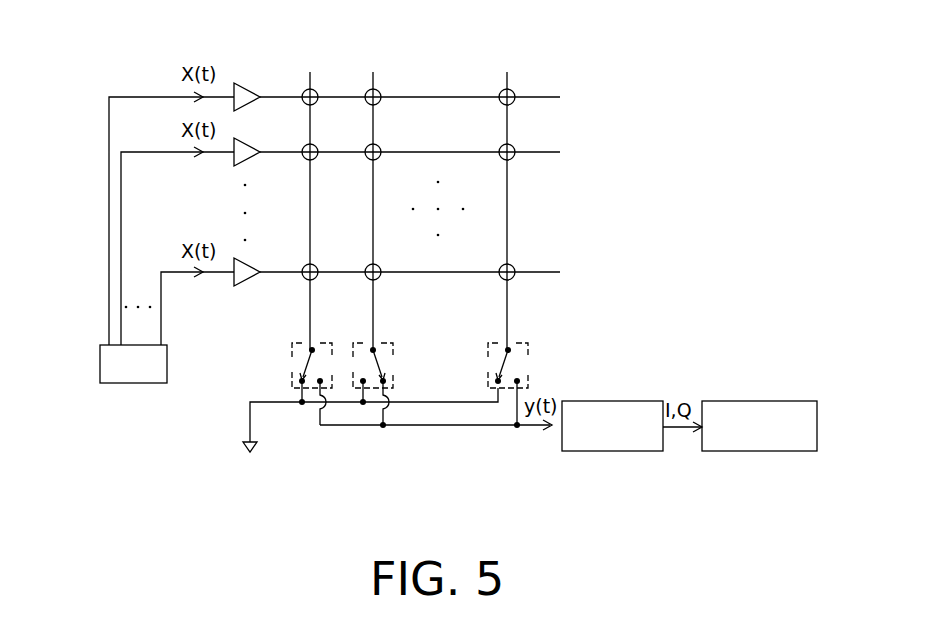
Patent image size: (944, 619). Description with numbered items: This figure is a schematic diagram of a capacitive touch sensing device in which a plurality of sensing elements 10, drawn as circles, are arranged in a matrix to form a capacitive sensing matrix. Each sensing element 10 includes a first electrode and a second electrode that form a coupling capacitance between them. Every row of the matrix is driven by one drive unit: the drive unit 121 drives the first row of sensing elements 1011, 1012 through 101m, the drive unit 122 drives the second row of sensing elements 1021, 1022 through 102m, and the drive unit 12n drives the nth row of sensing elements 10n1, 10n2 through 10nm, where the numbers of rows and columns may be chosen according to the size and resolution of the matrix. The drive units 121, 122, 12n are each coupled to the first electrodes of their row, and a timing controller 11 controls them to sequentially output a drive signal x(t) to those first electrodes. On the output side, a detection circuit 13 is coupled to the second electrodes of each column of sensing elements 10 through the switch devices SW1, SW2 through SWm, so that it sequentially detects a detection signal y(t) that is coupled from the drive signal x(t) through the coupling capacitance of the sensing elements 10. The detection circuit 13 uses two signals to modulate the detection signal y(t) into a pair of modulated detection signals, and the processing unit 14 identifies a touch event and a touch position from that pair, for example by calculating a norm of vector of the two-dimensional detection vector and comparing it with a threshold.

The sensing elements 10 is at (412, 180).
The sensing element 1011 is at (333, 85).
The sensing element 1012 is at (399, 85).
The sensing element 101m is at (532, 85).
The sensing element 1021 is at (333, 140).
The sensing element 1022 is at (399, 140).
The sensing element 102m is at (532, 140).
The sensing element 10n1 is at (333, 260).
The sensing element 10n2 is at (399, 260).
The sensing element 10nm is at (532, 260).
The timing controller 11 is at (100, 366).
The drive unit 121 is at (238, 84).
The drive unit 122 is at (245, 140).
The drive unit 12n is at (243, 287).
The detection circuit 13 is at (612, 452).
The processing unit 14 is at (755, 452).
The switch device SW1 is at (307, 408).
The switch device SW2 is at (373, 408).
The switch device SWm is at (507, 392).